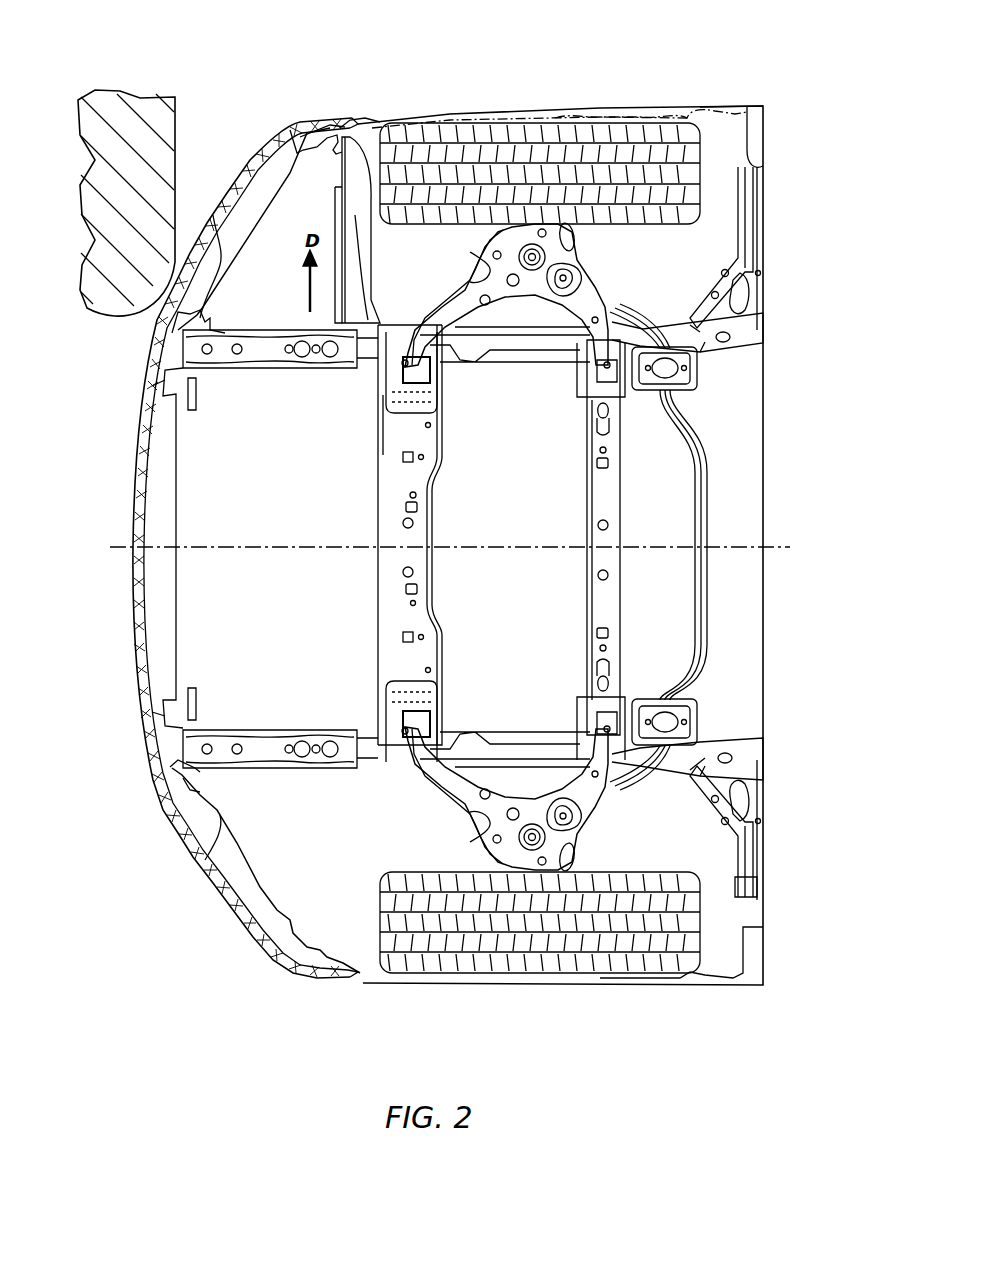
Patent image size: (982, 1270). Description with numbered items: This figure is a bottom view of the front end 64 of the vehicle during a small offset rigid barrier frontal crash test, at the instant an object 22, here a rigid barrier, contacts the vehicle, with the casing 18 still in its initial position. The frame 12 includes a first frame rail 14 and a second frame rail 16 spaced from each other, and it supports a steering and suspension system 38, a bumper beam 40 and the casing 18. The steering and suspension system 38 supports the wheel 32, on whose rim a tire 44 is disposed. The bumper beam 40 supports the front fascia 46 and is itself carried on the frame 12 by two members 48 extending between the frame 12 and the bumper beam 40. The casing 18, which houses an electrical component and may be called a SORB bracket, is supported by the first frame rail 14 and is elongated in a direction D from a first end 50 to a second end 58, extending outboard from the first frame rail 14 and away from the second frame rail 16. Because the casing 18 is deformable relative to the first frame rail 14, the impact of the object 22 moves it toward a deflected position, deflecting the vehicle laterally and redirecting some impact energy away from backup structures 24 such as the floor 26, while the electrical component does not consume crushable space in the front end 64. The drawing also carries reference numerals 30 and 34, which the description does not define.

The frame 12 is at (418, 308).
The first frame rail 14 is at (704, 340).
The second frame rail 16 is at (702, 760).
The casing 18 is at (333, 155).
The object 22 is at (174, 134).
The backup structures 24 is at (712, 260).
The floor 26 is at (750, 334).
The wheel 30 is at (447, 148).
The wheel 32 is at (522, 122).
The fender 34 is at (680, 170).
The steering and suspension system 38 is at (522, 318).
The bumper beam 40 is at (145, 625).
The tire 44 is at (580, 125).
The front fascia 46 is at (133, 515).
The members 48 is at (262, 344).
The first end 50 is at (382, 292).
The second end 58 is at (352, 198).
The front end 64 is at (661, 55).